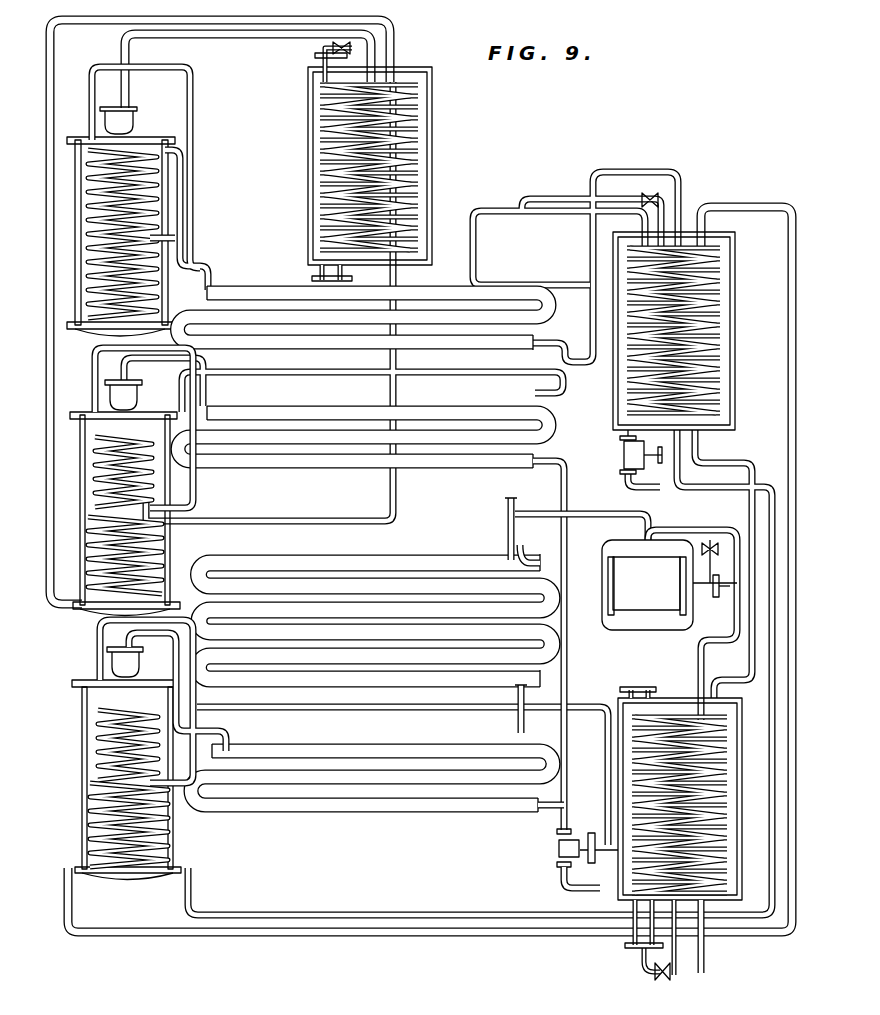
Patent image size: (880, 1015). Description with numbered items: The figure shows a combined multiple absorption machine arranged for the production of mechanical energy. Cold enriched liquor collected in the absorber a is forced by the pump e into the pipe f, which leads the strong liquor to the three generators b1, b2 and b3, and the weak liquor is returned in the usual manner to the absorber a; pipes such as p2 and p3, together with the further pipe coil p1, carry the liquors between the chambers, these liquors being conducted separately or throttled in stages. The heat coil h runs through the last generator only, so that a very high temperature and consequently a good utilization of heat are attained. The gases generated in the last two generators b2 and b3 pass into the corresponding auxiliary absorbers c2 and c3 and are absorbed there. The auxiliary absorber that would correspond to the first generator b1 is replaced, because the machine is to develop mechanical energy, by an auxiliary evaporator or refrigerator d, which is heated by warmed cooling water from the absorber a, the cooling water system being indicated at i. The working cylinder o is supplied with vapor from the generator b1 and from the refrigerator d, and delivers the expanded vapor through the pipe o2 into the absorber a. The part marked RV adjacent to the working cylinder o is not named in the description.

The generator b3 is at (80, 182).
The generator b2 is at (84, 474).
The generator b1 is at (82, 755).
The heat coil h is at (173, 237).
The auxiliary absorber c3 is at (418, 160).
The auxiliary absorber c2 is at (725, 347).
The pipe p3 is at (515, 340).
The pipe p2 is at (455, 465).
The serpentine pipe coil p1 is at (303, 797).
The absorber a is at (376, 620).
The cooling water system i is at (507, 501).
The working cylinder o is at (669, 625).
The pipe o2 is at (612, 512).
The relief valve RV is at (721, 549).
The evaporator or refrigerator d is at (727, 780).
The pump e is at (557, 853).
The pipe f is at (598, 868).